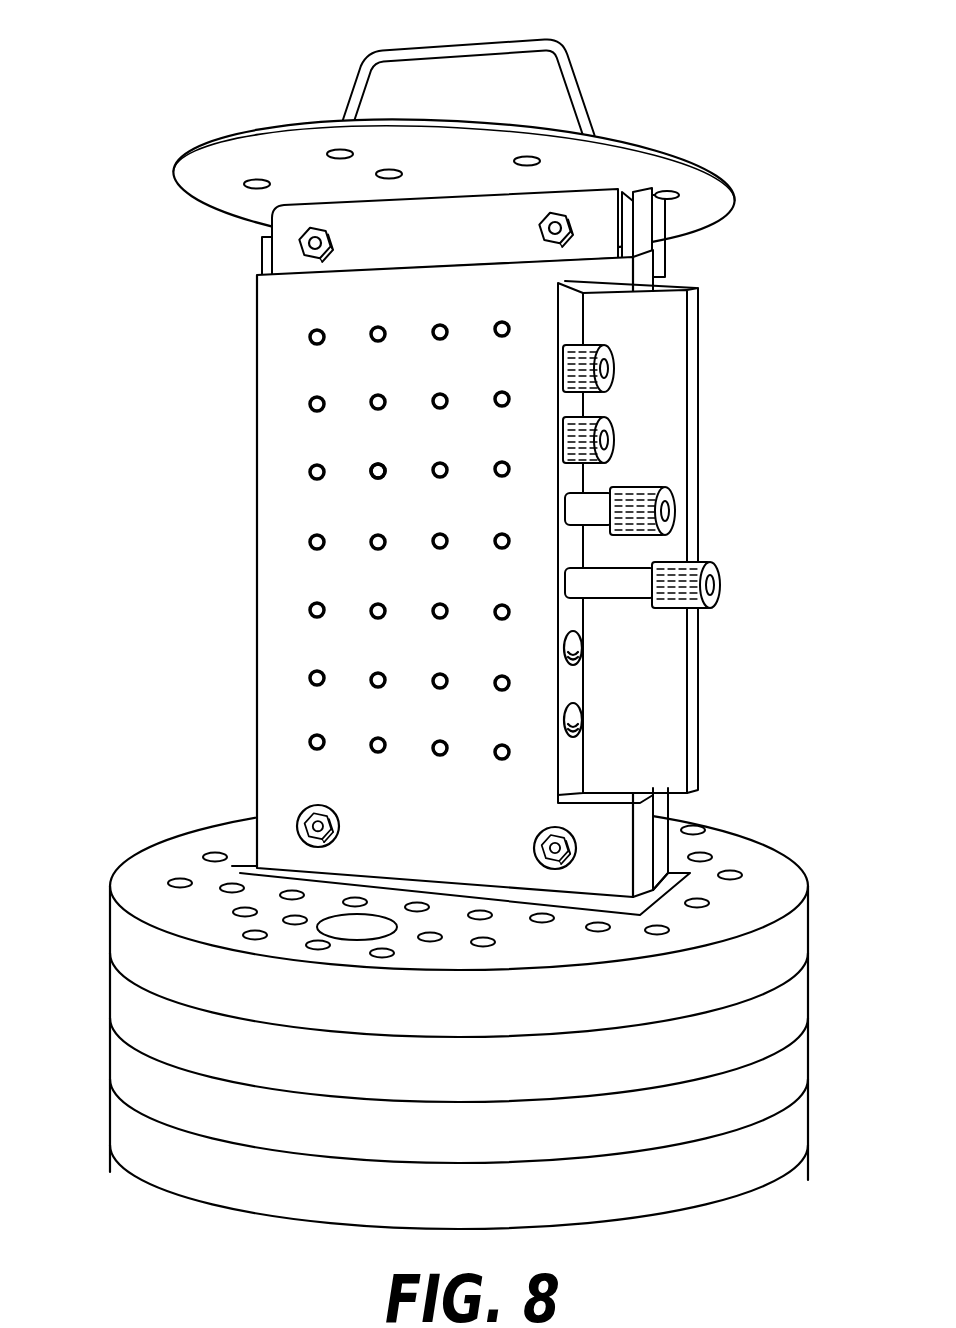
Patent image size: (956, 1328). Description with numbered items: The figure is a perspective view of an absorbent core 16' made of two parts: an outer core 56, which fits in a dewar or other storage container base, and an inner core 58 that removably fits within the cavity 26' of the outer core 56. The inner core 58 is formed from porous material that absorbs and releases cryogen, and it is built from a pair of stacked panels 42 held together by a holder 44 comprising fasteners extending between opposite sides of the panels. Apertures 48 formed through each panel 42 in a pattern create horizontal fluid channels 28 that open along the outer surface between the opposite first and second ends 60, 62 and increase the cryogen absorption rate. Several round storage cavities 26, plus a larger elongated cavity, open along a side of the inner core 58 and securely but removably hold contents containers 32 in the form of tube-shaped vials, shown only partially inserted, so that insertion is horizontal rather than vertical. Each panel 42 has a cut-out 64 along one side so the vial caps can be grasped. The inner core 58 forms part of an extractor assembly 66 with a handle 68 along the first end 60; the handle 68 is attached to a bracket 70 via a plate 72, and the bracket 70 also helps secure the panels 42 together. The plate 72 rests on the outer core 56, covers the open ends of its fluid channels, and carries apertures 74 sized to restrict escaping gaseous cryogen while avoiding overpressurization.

The absorbent core 16' is at (434, 615).
The storage cavities 26 is at (618, 679).
The cavity 26' is at (712, 823).
The fluid channels 28 is at (316, 540).
The contents containers 32 is at (672, 508).
The panels 42 is at (660, 291).
The holder 44 is at (333, 827).
The apertures 48 is at (387, 472).
The outer core 56 is at (120, 986).
The inner core 58 is at (425, 573).
The first end 60 is at (663, 247).
The second end 62 is at (280, 855).
The cut-out 64 is at (572, 316).
The extractor assembly 66 is at (450, 149).
The handle 68 is at (582, 75).
The bracket 70 is at (320, 220).
The plate 72 is at (630, 146).
The apertures 74 is at (340, 162).